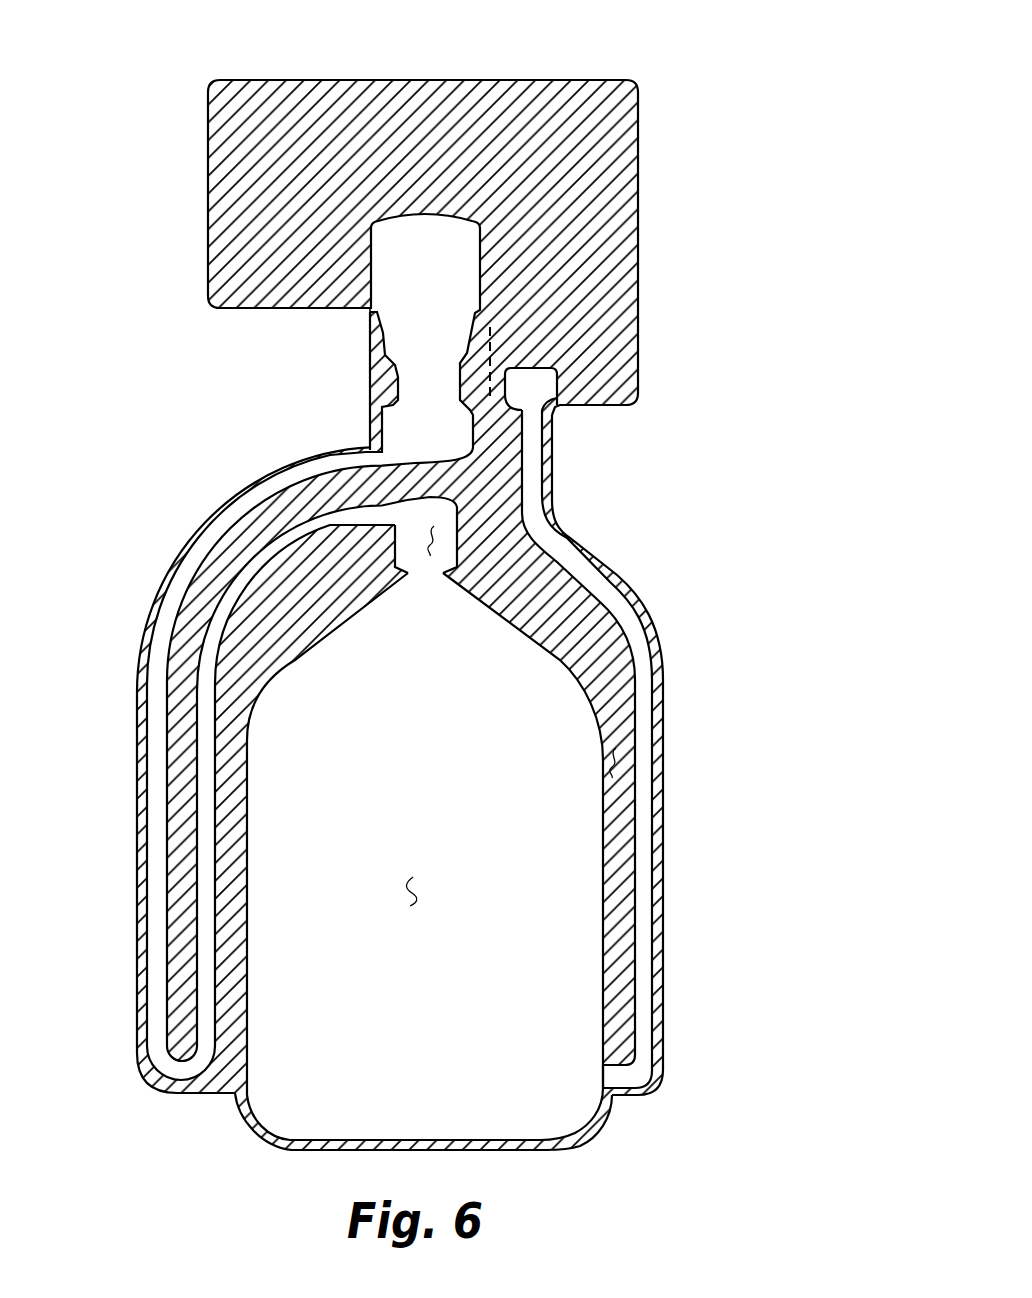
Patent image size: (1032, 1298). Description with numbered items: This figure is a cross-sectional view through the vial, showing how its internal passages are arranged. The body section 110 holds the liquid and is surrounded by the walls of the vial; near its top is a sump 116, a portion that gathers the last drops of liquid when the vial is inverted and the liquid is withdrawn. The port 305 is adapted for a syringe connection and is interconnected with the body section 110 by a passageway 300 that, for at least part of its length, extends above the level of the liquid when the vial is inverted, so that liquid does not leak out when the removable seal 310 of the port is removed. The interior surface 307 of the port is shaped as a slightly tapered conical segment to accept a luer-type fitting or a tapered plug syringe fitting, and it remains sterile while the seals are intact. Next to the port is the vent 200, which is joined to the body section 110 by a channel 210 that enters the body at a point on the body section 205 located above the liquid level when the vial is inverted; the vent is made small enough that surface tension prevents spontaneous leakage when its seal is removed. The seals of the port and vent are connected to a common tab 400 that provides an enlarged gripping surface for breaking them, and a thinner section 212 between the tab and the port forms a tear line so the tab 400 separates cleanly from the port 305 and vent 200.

The tab 400 is at (512, 78).
The interior surface of the port 307 is at (465, 318).
The thinner section 212 is at (692, 212).
The removable seal 310 is at (371, 315).
The port 305 is at (372, 367).
The vent 200 is at (558, 396).
The passageway 300 is at (136, 815).
The channel 210 is at (665, 706).
The body section 110 is at (416, 891).
The sump 116 is at (440, 537).
The point on the body section 205 is at (595, 1077).